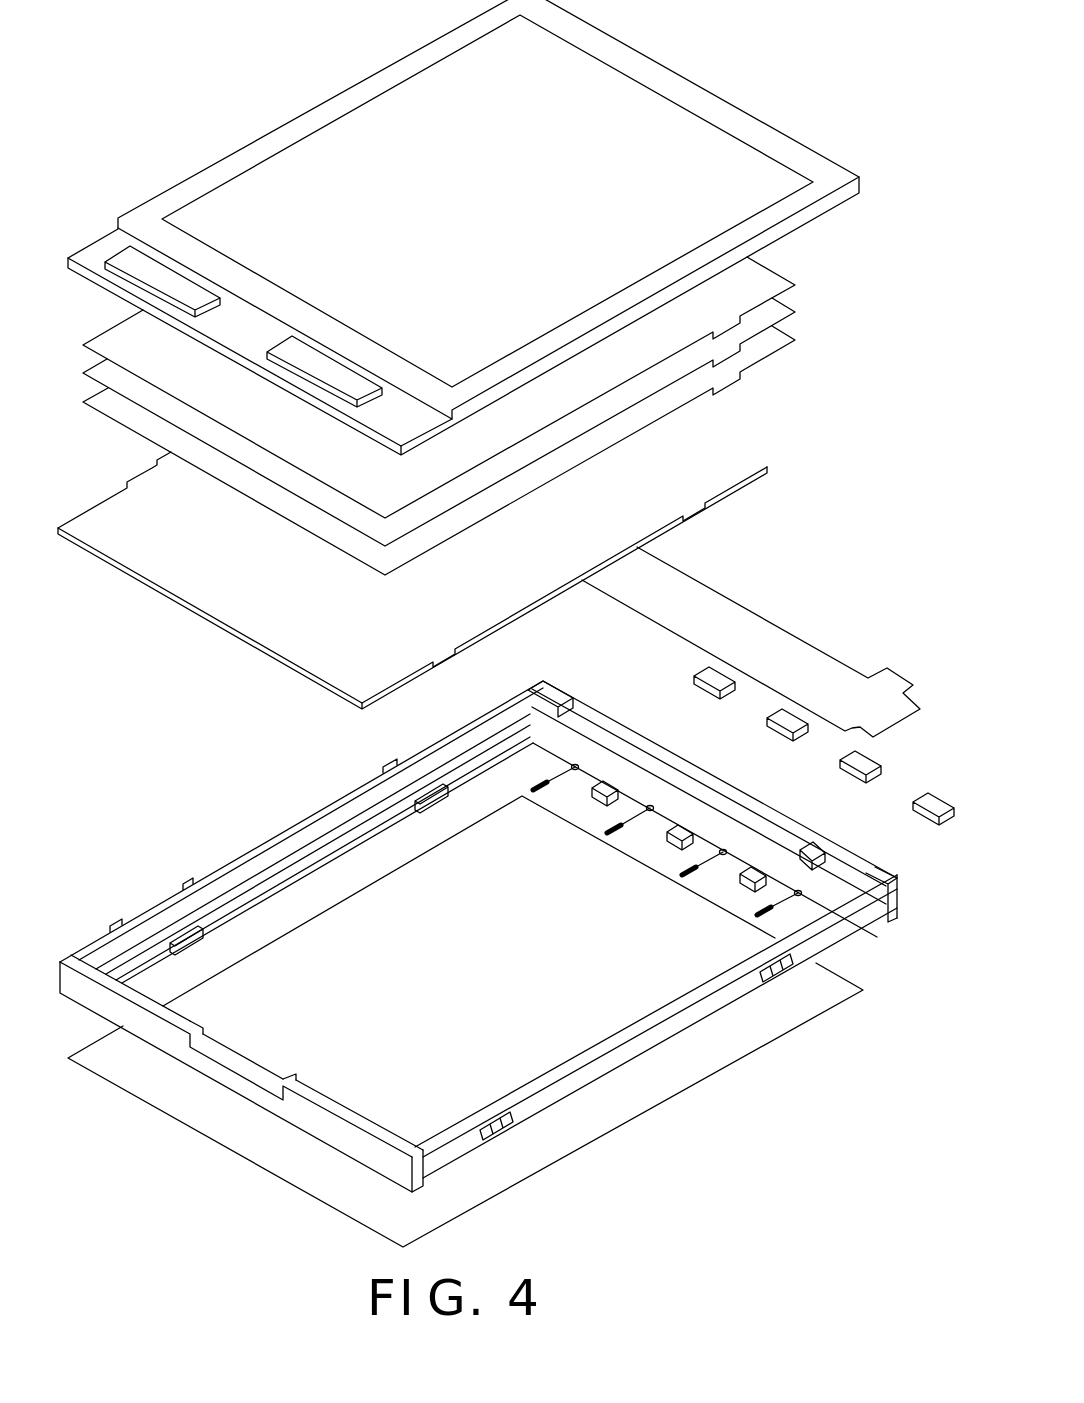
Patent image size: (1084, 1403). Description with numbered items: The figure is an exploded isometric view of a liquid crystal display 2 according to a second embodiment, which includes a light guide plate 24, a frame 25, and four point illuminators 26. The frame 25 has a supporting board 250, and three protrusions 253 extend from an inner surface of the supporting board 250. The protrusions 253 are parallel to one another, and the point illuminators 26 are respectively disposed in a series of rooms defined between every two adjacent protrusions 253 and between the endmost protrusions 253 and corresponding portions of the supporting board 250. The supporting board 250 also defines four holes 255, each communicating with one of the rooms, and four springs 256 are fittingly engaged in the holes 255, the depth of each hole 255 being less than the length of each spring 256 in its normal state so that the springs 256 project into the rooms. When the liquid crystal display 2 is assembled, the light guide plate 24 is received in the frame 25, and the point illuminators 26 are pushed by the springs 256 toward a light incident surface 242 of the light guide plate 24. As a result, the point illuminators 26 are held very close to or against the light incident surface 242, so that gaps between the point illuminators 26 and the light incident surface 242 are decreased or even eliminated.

The liquid crystal display 2 is at (360, 34).
The light guide plate 24 is at (733, 427).
The light incident surface 242 is at (762, 461).
The frame 25 is at (783, 816).
The supporting board 250 is at (602, 765).
The protrusions 253 is at (680, 826).
The holes 255 is at (650, 806).
The springs 256 is at (764, 910).
The point illuminators 26 is at (694, 676).